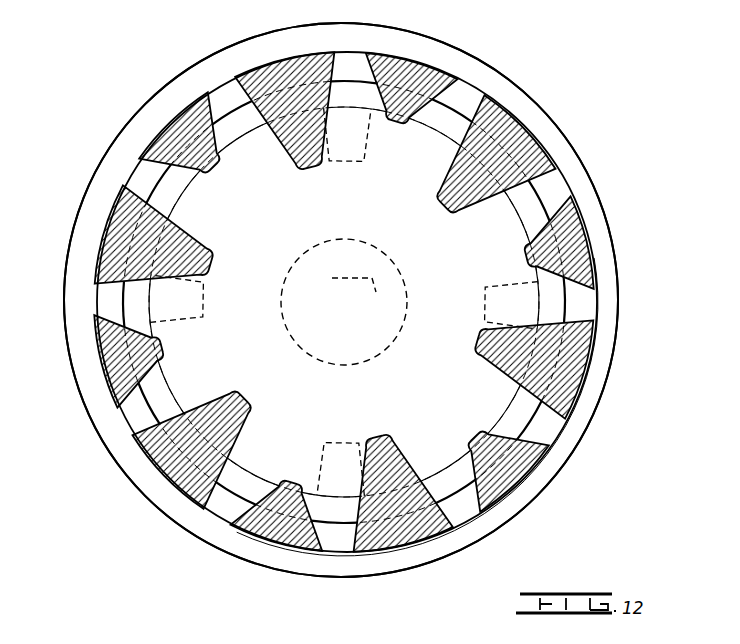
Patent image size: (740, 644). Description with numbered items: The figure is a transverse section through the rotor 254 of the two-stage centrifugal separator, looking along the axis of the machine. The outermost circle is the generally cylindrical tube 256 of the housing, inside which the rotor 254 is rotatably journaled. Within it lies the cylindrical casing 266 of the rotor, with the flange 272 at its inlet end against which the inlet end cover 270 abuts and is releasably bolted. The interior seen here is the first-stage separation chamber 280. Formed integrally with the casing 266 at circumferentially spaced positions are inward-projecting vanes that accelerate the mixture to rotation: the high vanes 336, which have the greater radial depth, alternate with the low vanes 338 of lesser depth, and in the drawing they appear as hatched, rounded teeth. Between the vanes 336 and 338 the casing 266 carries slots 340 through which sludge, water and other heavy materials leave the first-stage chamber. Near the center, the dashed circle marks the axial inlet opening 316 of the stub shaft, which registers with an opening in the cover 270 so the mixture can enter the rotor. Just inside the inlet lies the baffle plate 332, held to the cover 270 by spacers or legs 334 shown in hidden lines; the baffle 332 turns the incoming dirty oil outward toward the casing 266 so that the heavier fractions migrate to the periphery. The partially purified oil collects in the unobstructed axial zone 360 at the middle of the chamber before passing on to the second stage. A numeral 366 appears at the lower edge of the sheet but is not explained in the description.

The rotor 254 is at (616, 224).
The tube 256 is at (353, 66).
The casing 266 is at (548, 424).
The inlet end cover 270 is at (452, 121).
The flange 272 is at (548, 482).
The first-stage separation chamber 280 is at (445, 249).
The axial inlet opening 316 is at (334, 280).
The baffle plate 332 is at (417, 369).
The spacers 334 is at (194, 326).
The high vanes 336 is at (208, 251).
The low vanes 338 is at (208, 168).
The slots 340 is at (231, 88).
The unobstructed axial zone 360 is at (362, 339).
The lower element 366 is at (282, 638).